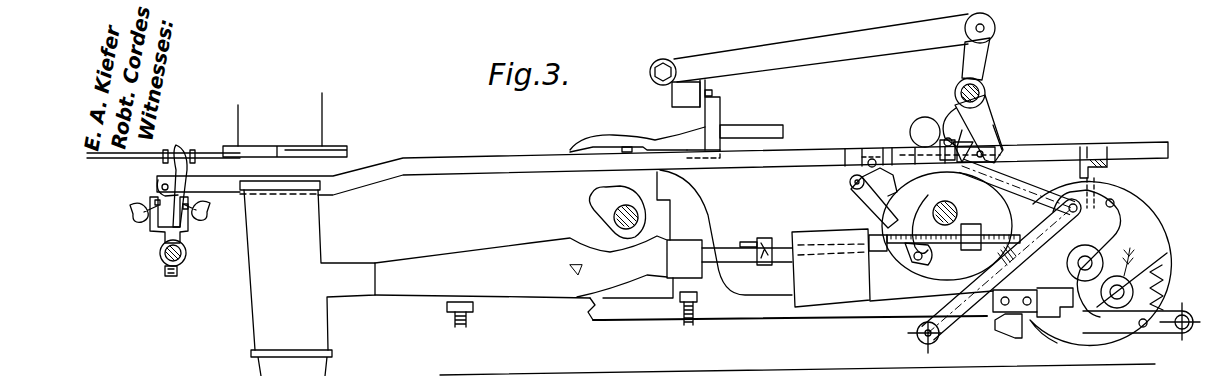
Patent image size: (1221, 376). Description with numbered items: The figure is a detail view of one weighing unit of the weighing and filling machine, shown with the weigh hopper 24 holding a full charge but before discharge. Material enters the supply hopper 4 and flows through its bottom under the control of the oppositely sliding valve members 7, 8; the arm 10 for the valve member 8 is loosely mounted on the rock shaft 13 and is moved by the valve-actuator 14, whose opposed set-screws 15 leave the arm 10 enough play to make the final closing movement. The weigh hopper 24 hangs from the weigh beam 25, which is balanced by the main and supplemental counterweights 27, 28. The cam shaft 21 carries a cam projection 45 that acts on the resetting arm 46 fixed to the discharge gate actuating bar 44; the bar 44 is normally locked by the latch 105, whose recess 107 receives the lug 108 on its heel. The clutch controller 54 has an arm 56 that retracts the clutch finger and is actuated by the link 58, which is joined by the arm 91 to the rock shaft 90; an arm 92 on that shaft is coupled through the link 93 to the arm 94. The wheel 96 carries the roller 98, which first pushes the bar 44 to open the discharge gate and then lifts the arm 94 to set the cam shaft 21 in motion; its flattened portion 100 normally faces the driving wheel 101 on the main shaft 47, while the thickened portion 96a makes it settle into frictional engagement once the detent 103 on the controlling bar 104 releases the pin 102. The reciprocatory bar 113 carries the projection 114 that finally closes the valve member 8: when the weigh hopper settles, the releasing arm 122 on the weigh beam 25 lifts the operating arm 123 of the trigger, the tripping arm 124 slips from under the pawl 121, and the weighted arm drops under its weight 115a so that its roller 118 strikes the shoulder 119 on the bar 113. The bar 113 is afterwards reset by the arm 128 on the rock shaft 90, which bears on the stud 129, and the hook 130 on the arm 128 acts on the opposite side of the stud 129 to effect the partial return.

The supply hopper 4 is at (285, 134).
The valve member 7 is at (352, 133).
The valve member 8 is at (212, 153).
The arm 10 is at (150, 183).
The rock shaft 13 is at (140, 265).
The valve-actuator 14 is at (145, 253).
The set-screws or projections 15 is at (125, 227).
The cam shaft 21 is at (626, 206).
The weigh hopper 24 is at (300, 263).
The weigh beam 25 is at (535, 282).
The main counterweight 27 is at (850, 292).
The supplemental counterweight 28 is at (1003, 222).
The discharge gate actuating bar 44 is at (775, 349).
The cam projection 45 is at (580, 215).
The resetting arm 46 is at (745, 202).
The main shaft 47 is at (985, 205).
The clutch controller 54 is at (700, 132).
The arm 56 is at (650, 132).
The link 58 is at (760, 52).
The rock shaft 90 is at (1032, 89).
The arm 91 is at (1025, 62).
The arm 92 is at (950, 85).
The link 93 is at (1058, 185).
The arm 94 is at (985, 308).
The wheel 96 is at (1065, 275).
The thickened portion 96a is at (1155, 245).
The roller or projection 98 is at (1165, 272).
The flattened portion 100 is at (1110, 242).
The driving wheel 101 is at (972, 279).
The pin or projection 102 is at (1200, 219).
The detent 103 is at (1193, 202).
The controlling bar 104 is at (1158, 182).
The latch 105 is at (1125, 335).
The recess 107 is at (1003, 365).
The lug 108 is at (1050, 367).
The reciprocatory bar 113 is at (475, 152).
The projection 114 is at (125, 203).
The weight 115a is at (943, 142).
The roller or projection 118 is at (872, 132).
The shoulder or stop 119 is at (915, 115).
The pawl 121 is at (815, 215).
The releasing arm or projection 122 is at (790, 295).
The operating arm 123 is at (765, 222).
The tripping arm 124 is at (930, 192).
The arm 128 is at (1072, 119).
The stud or projection 129 is at (1062, 165).
The hook 130 is at (1062, 139).